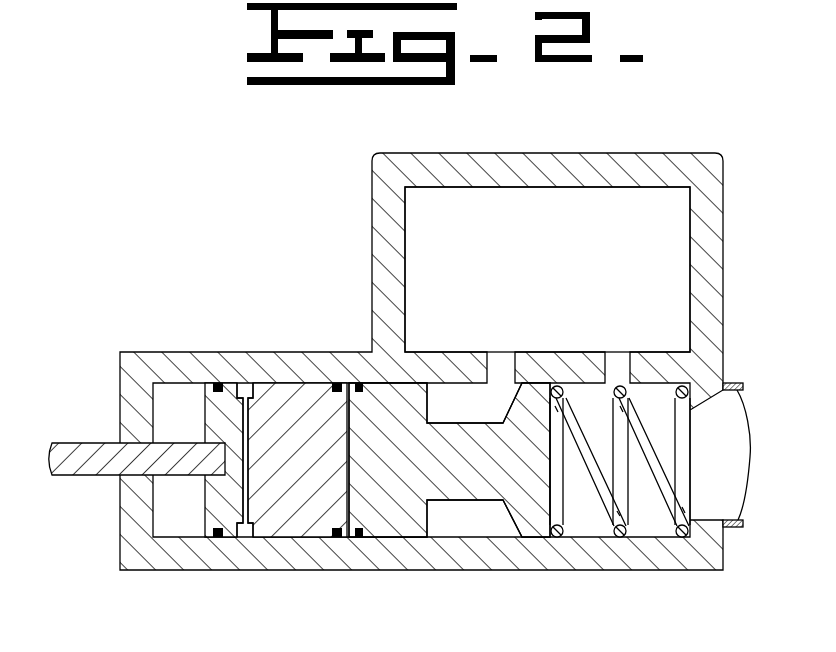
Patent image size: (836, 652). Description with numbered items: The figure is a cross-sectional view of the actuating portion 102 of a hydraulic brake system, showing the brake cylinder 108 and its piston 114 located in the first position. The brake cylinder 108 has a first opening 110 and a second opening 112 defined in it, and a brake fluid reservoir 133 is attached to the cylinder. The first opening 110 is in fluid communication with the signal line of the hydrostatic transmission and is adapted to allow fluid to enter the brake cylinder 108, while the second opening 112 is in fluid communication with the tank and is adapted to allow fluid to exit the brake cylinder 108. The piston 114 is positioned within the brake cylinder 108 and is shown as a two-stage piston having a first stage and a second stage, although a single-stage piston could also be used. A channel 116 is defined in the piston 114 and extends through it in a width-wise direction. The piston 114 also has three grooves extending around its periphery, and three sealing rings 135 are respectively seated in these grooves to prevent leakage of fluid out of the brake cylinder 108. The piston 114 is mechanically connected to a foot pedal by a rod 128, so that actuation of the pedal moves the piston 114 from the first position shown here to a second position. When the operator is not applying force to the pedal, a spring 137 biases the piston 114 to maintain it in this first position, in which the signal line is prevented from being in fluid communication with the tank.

The actuating portion 102 is at (397, 366).
The brake cylinder 108 is at (657, 571).
The first opening 110 is at (417, 511).
The second opening 112 is at (337, 384).
The piston 114 is at (183, 409).
The channel 116 is at (245, 528).
The rod 128 is at (78, 442).
The brake fluid reservoir 133 is at (625, 187).
The sealing rings 135 is at (213, 532).
The spring 137 is at (677, 571).